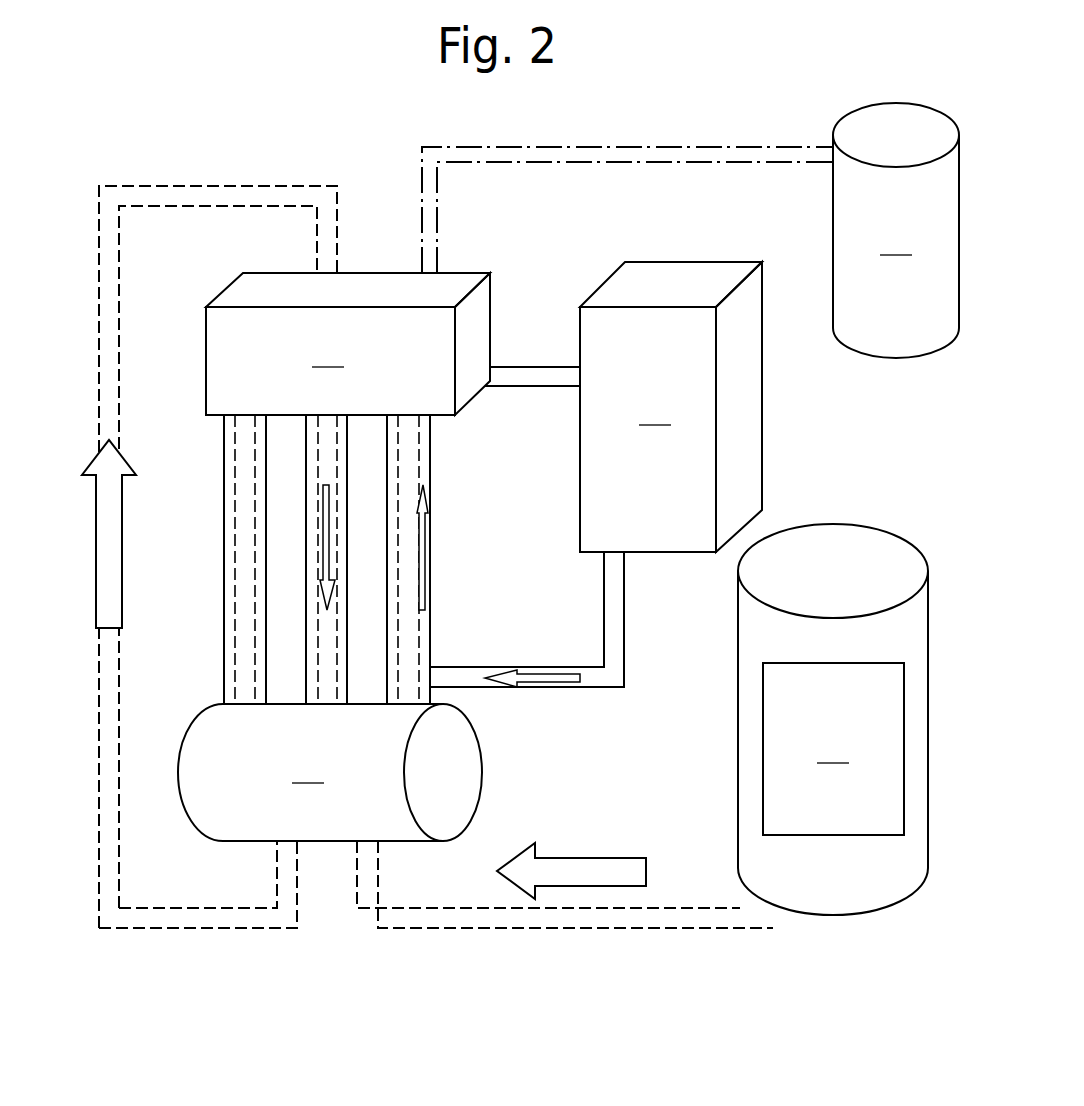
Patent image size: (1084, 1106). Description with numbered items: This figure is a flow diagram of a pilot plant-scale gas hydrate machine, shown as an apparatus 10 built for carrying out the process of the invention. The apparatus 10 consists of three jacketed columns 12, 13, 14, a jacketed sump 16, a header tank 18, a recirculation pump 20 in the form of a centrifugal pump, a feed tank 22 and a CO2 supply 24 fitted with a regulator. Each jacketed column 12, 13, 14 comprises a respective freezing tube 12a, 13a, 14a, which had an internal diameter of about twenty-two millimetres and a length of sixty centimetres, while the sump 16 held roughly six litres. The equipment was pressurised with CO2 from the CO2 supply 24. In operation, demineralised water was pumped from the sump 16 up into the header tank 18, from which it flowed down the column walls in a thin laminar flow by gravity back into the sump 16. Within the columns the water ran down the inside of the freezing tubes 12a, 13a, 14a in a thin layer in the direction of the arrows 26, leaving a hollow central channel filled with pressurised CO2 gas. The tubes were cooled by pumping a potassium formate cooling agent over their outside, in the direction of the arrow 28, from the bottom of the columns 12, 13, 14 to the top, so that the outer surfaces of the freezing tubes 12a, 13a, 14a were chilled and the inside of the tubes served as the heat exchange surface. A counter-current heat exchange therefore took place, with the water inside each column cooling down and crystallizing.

The apparatus 10 is at (174, 141).
The jacketed column 12 is at (224, 441).
The freezing tube 12a is at (235, 503).
The jacketed column 13 is at (306, 582).
The freezing tube 13a is at (318, 622).
The jacketed column 14 is at (430, 477).
The freezing tube 14a is at (419, 636).
The jacketed sump 16 is at (330, 772).
The header tank 18 is at (393, 344).
The recirculation pump 20 is at (671, 407).
The feed tank 22 is at (833, 719).
The CO2 supply 24 is at (896, 230).
The arrows 26 is at (100, 527).
The arrow 28 is at (425, 570).